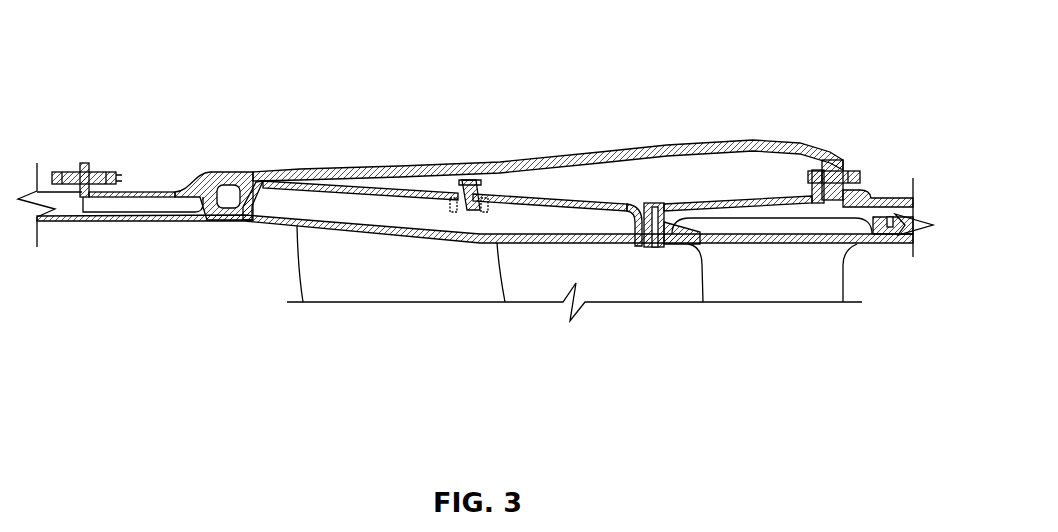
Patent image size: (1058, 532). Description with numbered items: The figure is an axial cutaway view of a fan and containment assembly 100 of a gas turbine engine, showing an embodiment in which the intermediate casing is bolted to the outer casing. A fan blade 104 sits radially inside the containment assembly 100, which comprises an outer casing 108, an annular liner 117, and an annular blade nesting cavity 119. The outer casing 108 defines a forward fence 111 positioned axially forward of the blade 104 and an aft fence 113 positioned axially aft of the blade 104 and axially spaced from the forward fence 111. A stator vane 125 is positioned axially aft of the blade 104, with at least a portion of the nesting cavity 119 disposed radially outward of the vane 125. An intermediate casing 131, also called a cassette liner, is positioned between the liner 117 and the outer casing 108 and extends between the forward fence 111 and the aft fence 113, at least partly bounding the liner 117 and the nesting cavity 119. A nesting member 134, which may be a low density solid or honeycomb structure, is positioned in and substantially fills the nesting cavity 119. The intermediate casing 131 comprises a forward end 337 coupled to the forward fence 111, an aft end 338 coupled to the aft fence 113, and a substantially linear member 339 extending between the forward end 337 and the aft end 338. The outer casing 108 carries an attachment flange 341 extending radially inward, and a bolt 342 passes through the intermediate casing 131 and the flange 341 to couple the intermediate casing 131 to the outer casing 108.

The containment assembly 100 is at (108, 40).
The blade 104 is at (360, 294).
The outer casing 108 is at (776, 141).
The forward fence 111 is at (218, 217).
The aft fence 113 is at (638, 238).
The annular liner 117 is at (357, 200).
The nesting cavity 119 is at (758, 178).
The stator vane 125 is at (832, 295).
The intermediate casing 131 is at (560, 198).
The nesting member 134 is at (793, 187).
The forward end 337 is at (247, 198).
The aft end 338 is at (642, 204).
The substantially linear member 339 is at (607, 203).
The attachment flange 341 is at (448, 184).
The bolt 342 is at (468, 195).